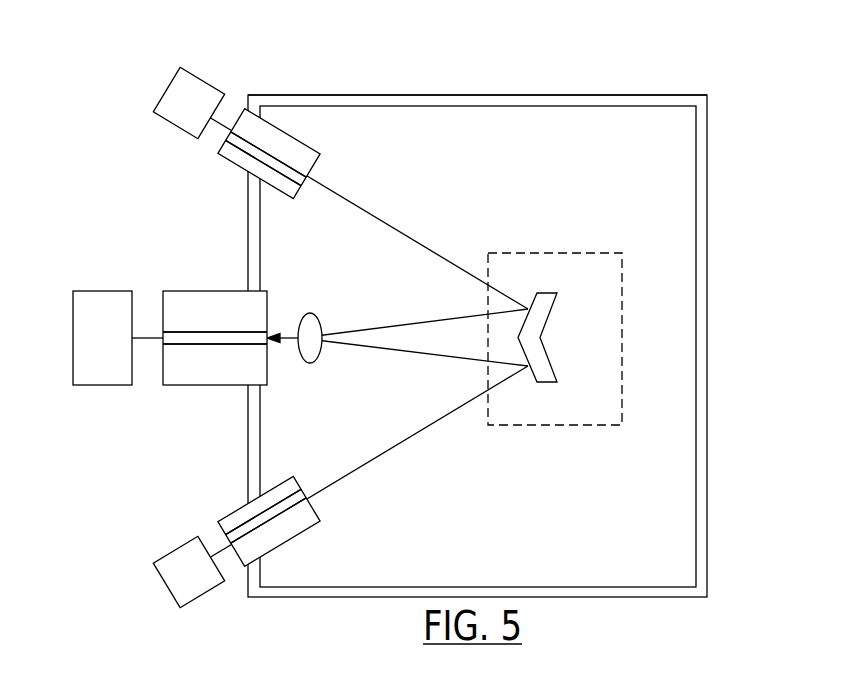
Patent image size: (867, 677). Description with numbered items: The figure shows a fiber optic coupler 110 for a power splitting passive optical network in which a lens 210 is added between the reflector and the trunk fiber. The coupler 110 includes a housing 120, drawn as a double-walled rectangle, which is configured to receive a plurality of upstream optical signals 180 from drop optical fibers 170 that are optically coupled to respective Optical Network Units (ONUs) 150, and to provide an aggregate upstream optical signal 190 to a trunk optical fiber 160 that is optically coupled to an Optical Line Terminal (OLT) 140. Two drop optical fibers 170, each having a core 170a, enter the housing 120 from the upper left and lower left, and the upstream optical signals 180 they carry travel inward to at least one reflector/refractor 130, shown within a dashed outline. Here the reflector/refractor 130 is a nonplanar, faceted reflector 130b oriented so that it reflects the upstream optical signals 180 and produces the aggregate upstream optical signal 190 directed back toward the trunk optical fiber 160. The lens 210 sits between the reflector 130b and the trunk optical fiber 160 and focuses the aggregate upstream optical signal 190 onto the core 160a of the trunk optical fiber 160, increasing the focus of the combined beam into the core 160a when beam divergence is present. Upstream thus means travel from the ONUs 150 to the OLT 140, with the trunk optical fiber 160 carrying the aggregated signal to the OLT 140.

The fiber optic coupler 110 is at (739, 139).
The housing 120 is at (270, 95).
The reflector/refractor 130 is at (547, 252).
The nonplanar reflector 130b is at (553, 304).
The Optical Line Terminal (OLT) 140 is at (114, 290).
The Optical Network Unit (ONU) 150 is at (204, 77).
The trunk optical fiber 160 is at (217, 290).
The core 160a is at (240, 335).
The drop optical fiber 170 is at (237, 166).
The core 170a is at (274, 153).
The upstream optical signal 180 is at (388, 225).
The aggregate upstream optical signal 190 is at (287, 334).
The lens 210 is at (317, 320).